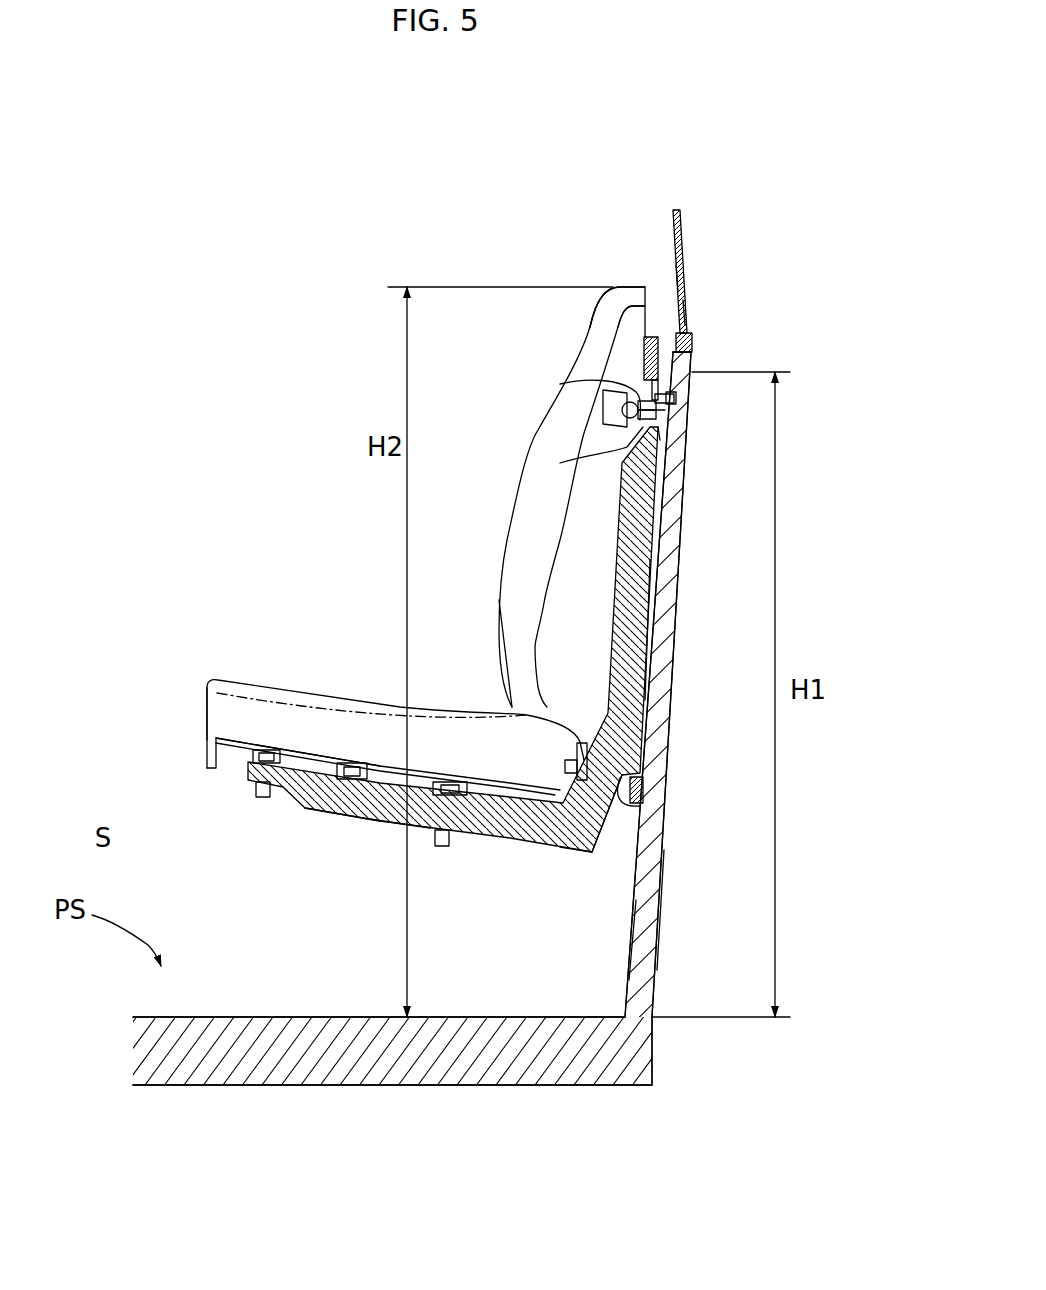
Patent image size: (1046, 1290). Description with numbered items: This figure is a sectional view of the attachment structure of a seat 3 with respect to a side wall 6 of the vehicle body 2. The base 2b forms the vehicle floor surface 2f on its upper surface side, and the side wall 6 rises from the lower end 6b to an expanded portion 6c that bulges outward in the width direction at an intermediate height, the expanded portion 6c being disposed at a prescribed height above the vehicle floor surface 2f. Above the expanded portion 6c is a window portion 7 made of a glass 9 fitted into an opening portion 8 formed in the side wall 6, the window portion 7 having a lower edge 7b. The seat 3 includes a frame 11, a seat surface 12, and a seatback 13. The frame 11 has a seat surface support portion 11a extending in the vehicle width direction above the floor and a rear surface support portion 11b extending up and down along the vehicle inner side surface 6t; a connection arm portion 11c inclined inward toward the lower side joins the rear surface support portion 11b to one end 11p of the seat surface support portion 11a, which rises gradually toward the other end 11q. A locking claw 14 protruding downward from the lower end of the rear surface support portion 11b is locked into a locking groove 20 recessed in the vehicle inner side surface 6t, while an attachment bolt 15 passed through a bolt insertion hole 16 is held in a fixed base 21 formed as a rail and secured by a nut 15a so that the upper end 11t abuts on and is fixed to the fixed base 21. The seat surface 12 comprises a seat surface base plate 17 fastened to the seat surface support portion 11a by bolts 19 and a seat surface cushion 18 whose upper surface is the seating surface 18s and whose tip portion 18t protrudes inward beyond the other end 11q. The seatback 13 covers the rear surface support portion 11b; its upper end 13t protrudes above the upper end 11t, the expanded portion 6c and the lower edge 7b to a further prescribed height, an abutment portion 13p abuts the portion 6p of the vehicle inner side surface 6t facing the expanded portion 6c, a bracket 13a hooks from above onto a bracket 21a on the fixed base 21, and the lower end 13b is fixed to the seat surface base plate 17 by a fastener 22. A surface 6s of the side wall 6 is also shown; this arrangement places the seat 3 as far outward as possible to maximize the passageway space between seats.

The vehicle body 2 is at (654, 968).
The base 2b is at (480, 1087).
The vehicle floor surface 2f is at (388, 1016).
The seat 3 is at (595, 310).
The side wall 6 is at (683, 567).
The lower end 6b is at (653, 1063).
The expanded portion 6c is at (693, 375).
The portion corresponding to the expanded portion 6p is at (692, 401).
The wall rear surface 6s is at (660, 910).
The vehicle inner side surface 6t is at (629, 970).
The window portion 7 is at (682, 259).
The lower edge 7b is at (693, 347).
The opening portion 8 is at (690, 332).
The glass 9 is at (684, 300).
The frame 11 is at (620, 536).
The seat surface support portion 11a is at (364, 821).
The rear surface support portion 11b is at (648, 644).
The connection arm portion 11c is at (617, 796).
The one end 11p is at (574, 851).
The other end 11q is at (243, 782).
The upper end 11t is at (670, 402).
The seat surface 12 is at (390, 705).
The seatback 13 is at (531, 462).
The bracket 13a is at (598, 434).
The lower end 13b is at (527, 784).
The abutment portion 13p is at (660, 345).
The upper end 13t is at (634, 285).
The locking claw 14 is at (644, 790).
The attachment bolt 15 is at (560, 384).
The nut 15a is at (560, 463).
The bolt insertion hole 16 is at (667, 410).
The seat surface base plate 17 is at (397, 823).
The seat surface cushion 18 is at (437, 707).
The seating surface 18s is at (362, 703).
The tip portion 18t is at (206, 680).
The bolt 19 is at (266, 798).
The locking groove 20 is at (644, 801).
The fixed base 21 is at (660, 441).
The bracket 21a is at (615, 383).
The fastener 22 is at (565, 765).